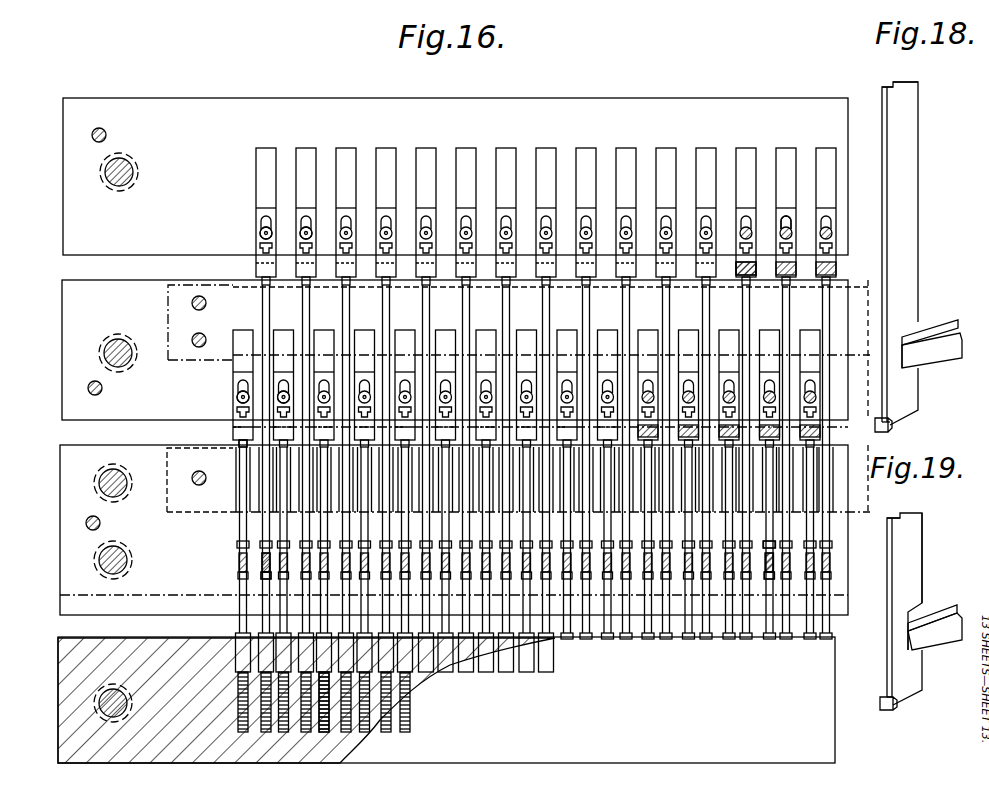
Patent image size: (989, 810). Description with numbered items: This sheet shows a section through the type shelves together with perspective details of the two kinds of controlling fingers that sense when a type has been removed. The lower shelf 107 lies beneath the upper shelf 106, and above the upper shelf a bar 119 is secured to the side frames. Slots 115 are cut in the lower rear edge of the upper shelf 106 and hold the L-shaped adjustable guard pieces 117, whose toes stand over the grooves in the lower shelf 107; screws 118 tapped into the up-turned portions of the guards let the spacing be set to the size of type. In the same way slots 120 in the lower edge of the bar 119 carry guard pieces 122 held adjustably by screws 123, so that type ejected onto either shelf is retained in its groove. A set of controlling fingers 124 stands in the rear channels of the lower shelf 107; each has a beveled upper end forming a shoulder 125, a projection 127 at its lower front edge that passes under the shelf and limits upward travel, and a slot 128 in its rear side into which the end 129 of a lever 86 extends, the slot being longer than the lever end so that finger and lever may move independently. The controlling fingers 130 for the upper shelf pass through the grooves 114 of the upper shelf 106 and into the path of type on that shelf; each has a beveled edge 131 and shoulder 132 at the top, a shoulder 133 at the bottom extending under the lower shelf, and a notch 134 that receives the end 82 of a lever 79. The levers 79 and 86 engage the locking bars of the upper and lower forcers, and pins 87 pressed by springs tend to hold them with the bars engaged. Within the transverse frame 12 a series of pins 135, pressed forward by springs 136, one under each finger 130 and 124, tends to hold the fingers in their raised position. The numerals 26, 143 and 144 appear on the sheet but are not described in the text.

In FIG. 16, the transverse frame 12 is at (446, 700).
In FIG. 19, the bar 26 is at (887, 503).
In FIG. 16, the lever 79 is at (300, 567).
In FIG. 18, the lever 79 is at (946, 357).
In FIG. 16, the end of lever 82 is at (300, 578).
In FIG. 18, the end of lever 82 is at (912, 366).
In FIG. 16, the lever 86 is at (778, 568).
In FIG. 19, the lever 86 is at (946, 635).
In FIG. 16, the pin 87 is at (596, 641).
In FIG. 16, the upper shelf 106 is at (117, 410).
In FIG. 16, the lower shelf 107 is at (60, 516).
In FIG. 16, the groove 114 is at (793, 217).
In FIG. 16, the slot 115 is at (560, 336).
In FIG. 16, the adjustable guard piece 117 is at (300, 441).
In FIG. 16, the screw 118 is at (286, 398).
In FIG. 16, the bar 119 is at (394, 101).
In FIG. 16, the slot 120 is at (440, 137).
In FIG. 16, the guard piece 122 is at (300, 258).
In FIG. 16, the screw 123 is at (302, 230).
In FIG. 16, the controlling finger 124 is at (300, 596).
In FIG. 19, the controlling finger 124 is at (924, 560).
In FIG. 19, the shoulder 125 is at (915, 515).
In FIG. 19, the projection 127 is at (884, 706).
In FIG. 16, the slot 128 is at (780, 549).
In FIG. 19, the slot 128 is at (918, 624).
In FIG. 16, the end of lever 129 is at (770, 586).
In FIG. 19, the end of lever 129 is at (925, 637).
In FIG. 16, the controlling finger 130 is at (264, 320).
In FIG. 18, the controlling finger 130 is at (907, 216).
In FIG. 16, the beveled upper edge 131 is at (426, 288).
In FIG. 18, the beveled upper edge 131 is at (907, 83).
In FIG. 18, the shoulder 132 is at (887, 85).
In FIG. 18, the shoulder 133 is at (886, 428).
In FIG. 16, the notch 134 is at (340, 552).
In FIG. 18, the notch 134 is at (910, 333).
In FIG. 16, the pin 135 is at (406, 674).
In FIG. 16, the spring 136 is at (372, 702).
In FIG. 16, the opening 143 is at (194, 356).
In FIG. 16, the opening 144 is at (182, 513).